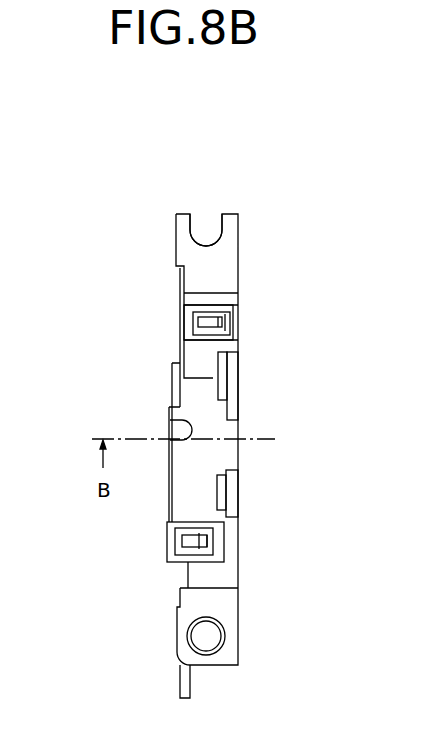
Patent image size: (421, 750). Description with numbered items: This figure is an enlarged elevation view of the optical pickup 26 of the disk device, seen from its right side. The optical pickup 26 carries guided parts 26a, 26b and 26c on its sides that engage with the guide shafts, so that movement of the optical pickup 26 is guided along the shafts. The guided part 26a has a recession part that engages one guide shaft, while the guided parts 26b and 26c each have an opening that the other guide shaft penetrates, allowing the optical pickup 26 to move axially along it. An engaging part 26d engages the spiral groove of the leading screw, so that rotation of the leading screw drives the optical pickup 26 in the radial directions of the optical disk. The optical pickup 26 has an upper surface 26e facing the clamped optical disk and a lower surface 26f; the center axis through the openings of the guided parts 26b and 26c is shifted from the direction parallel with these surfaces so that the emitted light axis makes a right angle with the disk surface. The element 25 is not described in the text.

The optical pickup 26 is at (258, 156).
The guided part 26a is at (201, 233).
The guided part 26b is at (140, 636).
The guided part 26c is at (196, 628).
The engaging part 26d is at (184, 680).
The upper surface 26e is at (169, 408).
The lower surface 26f is at (238, 352).
The contact plate 25 is at (168, 508).